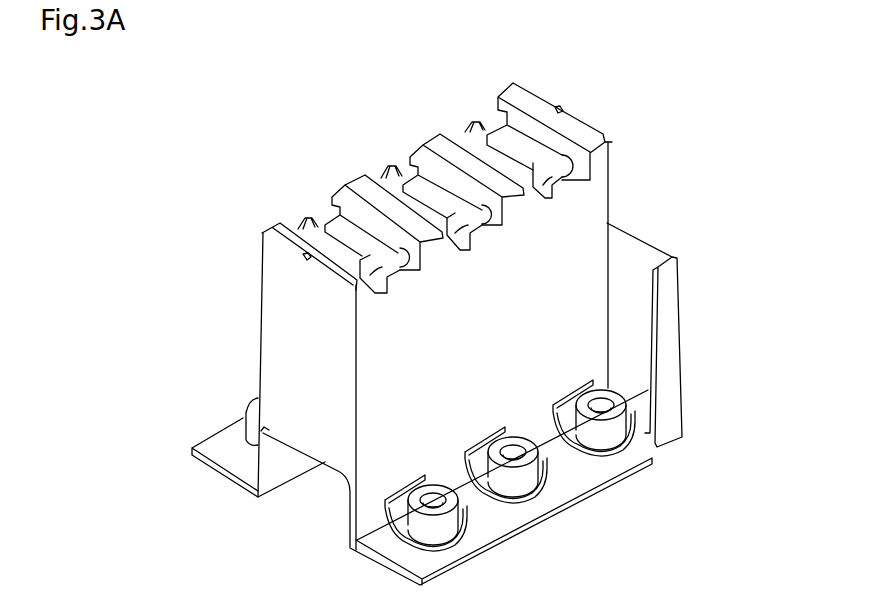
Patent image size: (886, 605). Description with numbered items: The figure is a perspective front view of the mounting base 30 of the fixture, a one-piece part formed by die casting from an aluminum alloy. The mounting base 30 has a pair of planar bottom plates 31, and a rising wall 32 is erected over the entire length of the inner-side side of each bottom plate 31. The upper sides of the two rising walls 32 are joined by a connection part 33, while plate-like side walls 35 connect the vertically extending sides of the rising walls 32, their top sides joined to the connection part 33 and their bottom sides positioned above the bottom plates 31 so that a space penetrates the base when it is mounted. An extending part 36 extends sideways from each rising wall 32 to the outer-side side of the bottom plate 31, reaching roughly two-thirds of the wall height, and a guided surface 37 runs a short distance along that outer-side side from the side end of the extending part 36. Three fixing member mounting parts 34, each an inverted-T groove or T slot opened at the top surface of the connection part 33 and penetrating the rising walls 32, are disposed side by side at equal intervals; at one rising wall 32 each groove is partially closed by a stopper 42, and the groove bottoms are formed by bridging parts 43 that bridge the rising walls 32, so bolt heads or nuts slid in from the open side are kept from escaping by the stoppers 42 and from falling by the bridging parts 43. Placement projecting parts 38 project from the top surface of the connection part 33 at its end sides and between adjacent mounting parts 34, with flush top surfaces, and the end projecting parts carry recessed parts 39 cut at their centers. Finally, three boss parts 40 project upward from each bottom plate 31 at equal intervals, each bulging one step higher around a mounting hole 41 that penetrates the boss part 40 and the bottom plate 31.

The mounting base 30 is at (740, 104).
The bottom plate 31 is at (210, 448).
The rising wall 32 is at (382, 423).
The connection part 33 is at (593, 128).
The fixing member mounting part 34 is at (411, 268).
The side wall 35 is at (300, 346).
The extending part 36 is at (643, 258).
The guided surface 37 is at (667, 333).
The placement projecting part 38 is at (270, 228).
The recessed part 39 is at (305, 257).
The boss part 40 is at (250, 403).
The mounting hole 41 is at (445, 500).
The stopper 42 is at (306, 223).
The bridging part 43 is at (388, 294).